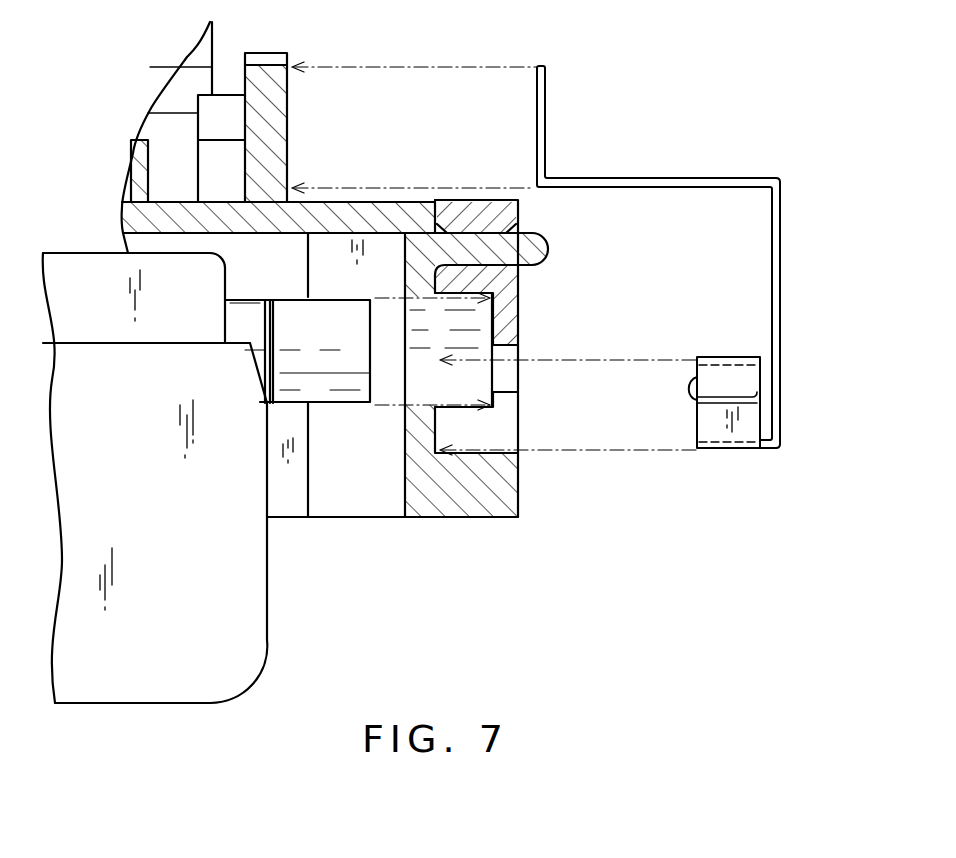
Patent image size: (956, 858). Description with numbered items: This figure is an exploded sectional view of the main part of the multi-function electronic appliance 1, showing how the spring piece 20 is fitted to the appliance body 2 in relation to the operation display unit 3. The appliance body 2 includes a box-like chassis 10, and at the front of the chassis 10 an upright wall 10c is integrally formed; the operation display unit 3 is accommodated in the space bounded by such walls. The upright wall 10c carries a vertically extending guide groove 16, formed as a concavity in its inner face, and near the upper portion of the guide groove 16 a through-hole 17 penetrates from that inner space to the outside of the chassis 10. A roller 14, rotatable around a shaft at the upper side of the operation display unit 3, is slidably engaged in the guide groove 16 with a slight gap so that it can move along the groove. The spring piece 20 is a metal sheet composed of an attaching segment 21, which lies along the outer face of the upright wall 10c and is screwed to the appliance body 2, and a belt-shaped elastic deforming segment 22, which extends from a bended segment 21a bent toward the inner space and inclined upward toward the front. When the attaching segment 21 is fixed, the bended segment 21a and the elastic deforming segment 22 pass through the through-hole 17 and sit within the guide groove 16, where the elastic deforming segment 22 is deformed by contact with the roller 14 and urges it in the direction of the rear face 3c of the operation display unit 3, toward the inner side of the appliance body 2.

The multi-function electronic appliance 1 is at (573, 80).
The appliance body 2 is at (287, 105).
The operation display unit 3 is at (270, 640).
The rear face 3c is at (82, 252).
The chassis 10 is at (520, 213).
The upright wall 10c is at (378, 492).
The roller 14 is at (338, 380).
The guide groove 16 is at (490, 295).
The through-hole 17 is at (493, 450).
The spring piece 20 is at (785, 338).
The attaching segment 21 is at (781, 272).
The bended segment 21a is at (732, 450).
The elastic deforming segment 22 is at (723, 380).